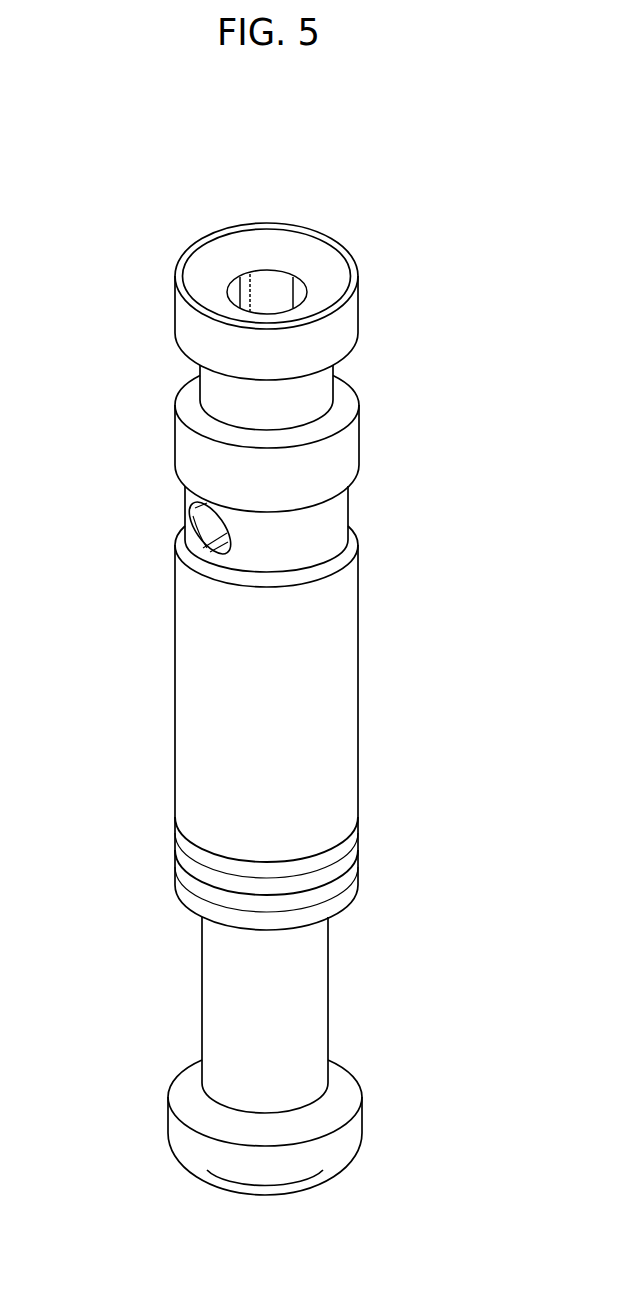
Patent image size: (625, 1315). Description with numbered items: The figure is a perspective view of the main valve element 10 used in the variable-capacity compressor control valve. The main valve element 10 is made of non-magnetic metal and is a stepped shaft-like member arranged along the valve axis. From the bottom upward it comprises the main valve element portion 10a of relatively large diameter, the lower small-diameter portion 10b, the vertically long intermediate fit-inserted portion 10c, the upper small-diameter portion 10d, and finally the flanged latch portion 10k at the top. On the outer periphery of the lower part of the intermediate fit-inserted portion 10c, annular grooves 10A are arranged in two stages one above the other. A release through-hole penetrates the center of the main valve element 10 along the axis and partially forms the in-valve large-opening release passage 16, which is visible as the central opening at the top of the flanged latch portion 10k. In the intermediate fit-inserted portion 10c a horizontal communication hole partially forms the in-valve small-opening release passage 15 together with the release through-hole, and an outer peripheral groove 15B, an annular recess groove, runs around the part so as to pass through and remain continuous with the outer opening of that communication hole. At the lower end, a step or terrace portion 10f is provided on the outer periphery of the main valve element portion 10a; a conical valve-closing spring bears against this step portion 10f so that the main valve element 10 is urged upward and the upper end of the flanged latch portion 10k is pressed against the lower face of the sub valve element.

The main valve element 10 is at (344, 236).
The flanged latch portion 10k is at (183, 318).
The in-valve large-opening release passage 16 is at (272, 293).
The upper small-diameter portion 10d is at (302, 400).
The outer peripheral groove 15B is at (302, 538).
The in-valve small-opening release passage 15 is at (203, 527).
The intermediate fit-inserted portion 10c is at (333, 712).
The annular grooves 10A is at (217, 862).
The lower small-diameter portion 10b is at (307, 1000).
The main valve element portion 10a is at (340, 1140).
The step portion 10f is at (188, 1160).